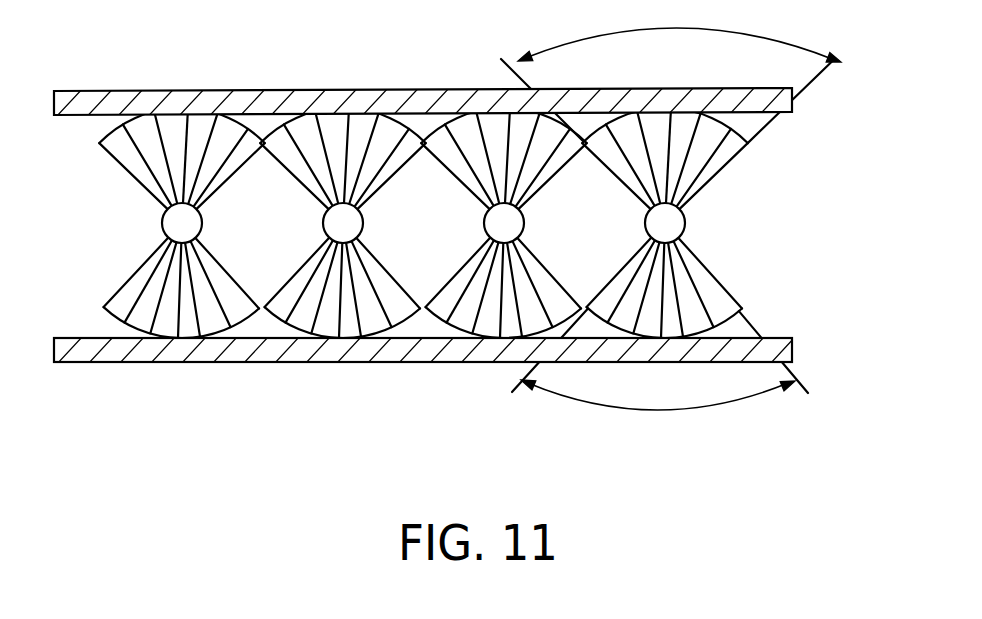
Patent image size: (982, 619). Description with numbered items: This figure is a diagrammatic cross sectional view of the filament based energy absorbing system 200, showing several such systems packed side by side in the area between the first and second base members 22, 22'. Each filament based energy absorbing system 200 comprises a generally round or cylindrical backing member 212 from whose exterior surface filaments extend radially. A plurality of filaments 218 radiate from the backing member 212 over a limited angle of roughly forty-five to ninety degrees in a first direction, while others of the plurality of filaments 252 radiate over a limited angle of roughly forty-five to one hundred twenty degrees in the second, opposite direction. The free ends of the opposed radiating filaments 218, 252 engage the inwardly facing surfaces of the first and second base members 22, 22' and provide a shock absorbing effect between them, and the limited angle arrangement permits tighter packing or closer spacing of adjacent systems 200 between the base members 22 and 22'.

The filament based energy absorbing system 200 is at (478, 217).
The backing member 212 is at (187, 223).
The plurality of filaments 218 is at (185, 142).
The plurality of filaments 252 is at (188, 308).
The first base member 22 is at (425, 381).
The second base member 22' is at (423, 74).